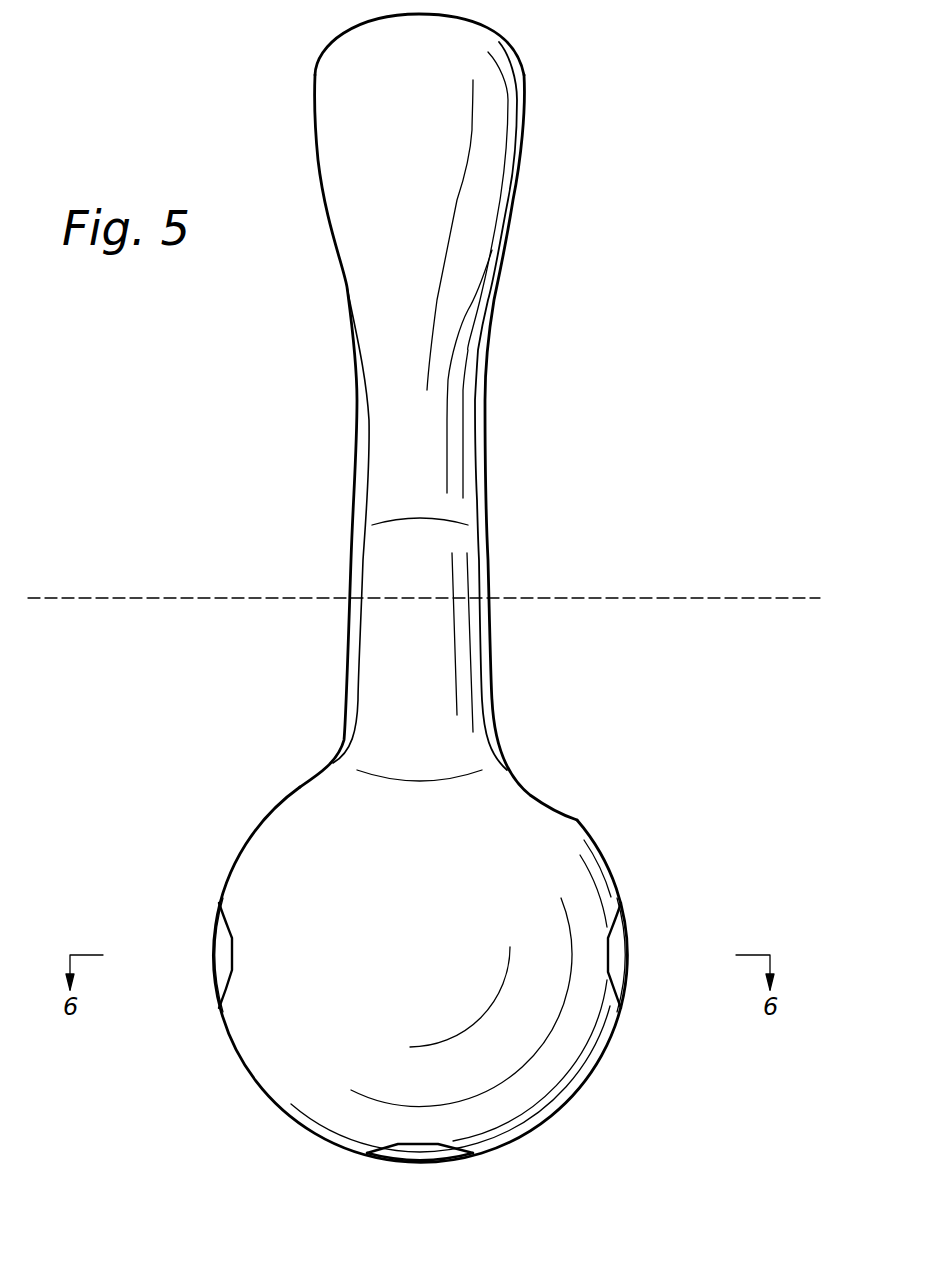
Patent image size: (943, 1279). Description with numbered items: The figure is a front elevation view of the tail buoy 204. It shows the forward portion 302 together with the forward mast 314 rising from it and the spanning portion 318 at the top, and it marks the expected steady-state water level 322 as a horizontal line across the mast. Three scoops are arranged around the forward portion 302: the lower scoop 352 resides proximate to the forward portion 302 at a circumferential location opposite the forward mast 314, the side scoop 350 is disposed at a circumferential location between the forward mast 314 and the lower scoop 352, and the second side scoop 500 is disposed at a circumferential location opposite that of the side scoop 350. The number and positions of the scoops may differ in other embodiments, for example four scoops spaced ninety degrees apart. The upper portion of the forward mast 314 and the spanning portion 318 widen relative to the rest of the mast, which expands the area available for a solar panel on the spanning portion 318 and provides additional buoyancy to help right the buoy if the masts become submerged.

The tail buoy 204 is at (214, 353).
The forward mast 314 is at (443, 476).
The spanning portion 318 is at (512, 45).
The forward portion 302 is at (393, 925).
The expected steady-state water level 322 is at (694, 598).
The side scoop 350 is at (226, 953).
The second side scoop 500 is at (613, 957).
The lower scoop 352 is at (418, 1152).